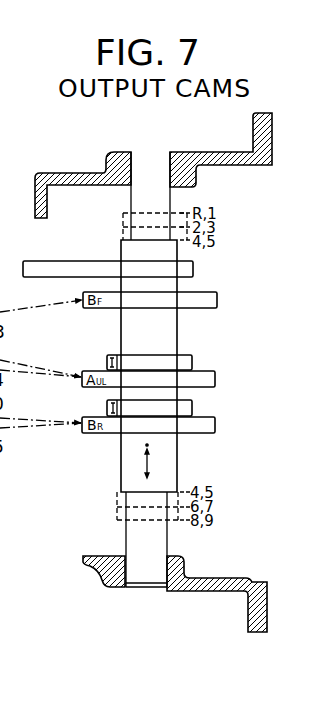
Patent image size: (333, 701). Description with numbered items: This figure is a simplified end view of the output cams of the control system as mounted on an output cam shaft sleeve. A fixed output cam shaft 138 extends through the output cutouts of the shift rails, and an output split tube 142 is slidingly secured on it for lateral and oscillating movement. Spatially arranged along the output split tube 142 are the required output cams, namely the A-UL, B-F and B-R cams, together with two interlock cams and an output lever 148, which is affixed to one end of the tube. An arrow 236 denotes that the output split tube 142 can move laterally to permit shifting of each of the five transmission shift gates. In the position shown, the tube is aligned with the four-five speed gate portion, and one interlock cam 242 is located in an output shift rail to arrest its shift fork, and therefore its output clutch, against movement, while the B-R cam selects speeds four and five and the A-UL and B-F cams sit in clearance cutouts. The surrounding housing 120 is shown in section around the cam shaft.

The housing 120 is at (221, 151).
The output cam shaft 138 is at (148, 570).
The output split tube 142 is at (121, 462).
The output lever 148 is at (68, 270).
The arrow 236 is at (155, 462).
The interlock cam 242 is at (108, 355).